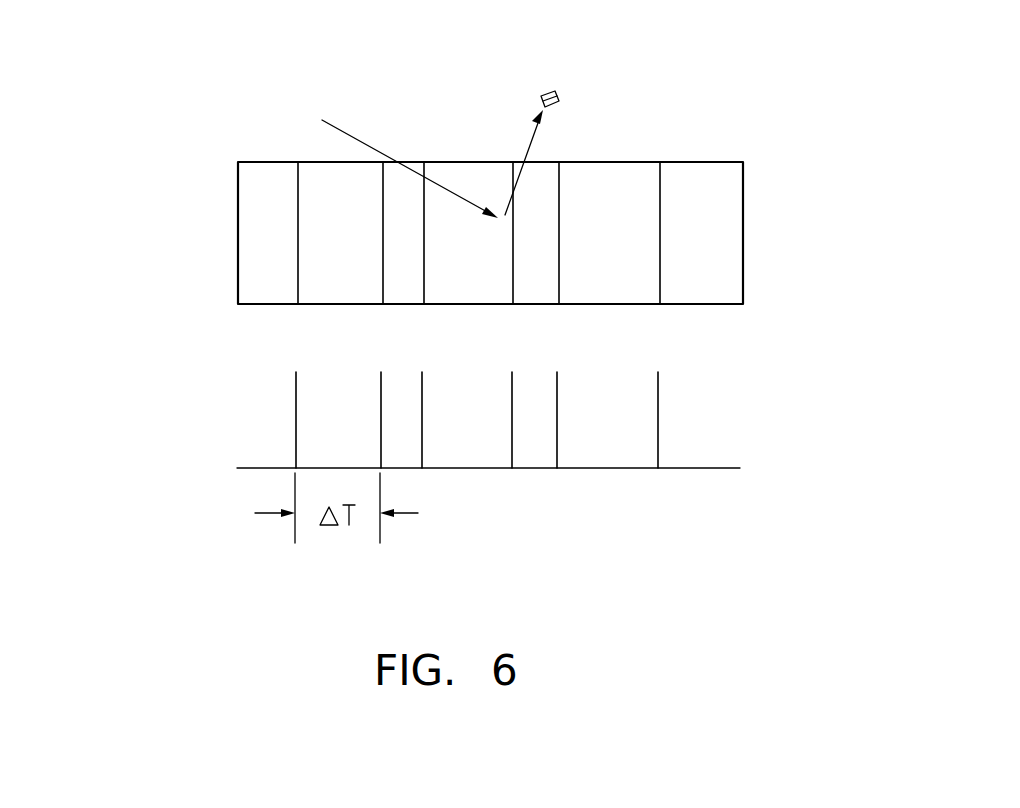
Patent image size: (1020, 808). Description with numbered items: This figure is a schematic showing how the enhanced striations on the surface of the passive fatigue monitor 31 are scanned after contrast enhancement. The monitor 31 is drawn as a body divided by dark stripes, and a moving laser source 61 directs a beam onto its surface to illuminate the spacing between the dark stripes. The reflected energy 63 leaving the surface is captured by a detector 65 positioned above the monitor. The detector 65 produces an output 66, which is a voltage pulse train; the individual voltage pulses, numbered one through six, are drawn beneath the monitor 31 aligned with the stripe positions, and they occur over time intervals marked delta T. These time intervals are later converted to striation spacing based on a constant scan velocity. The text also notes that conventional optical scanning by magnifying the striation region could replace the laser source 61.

The passive fatigue monitor 31 is at (535, 233).
The moving laser source 61 is at (305, 119).
The reflected energy 63 is at (480, 147).
The detector 65 is at (592, 56).
The output 66 is at (130, 458).